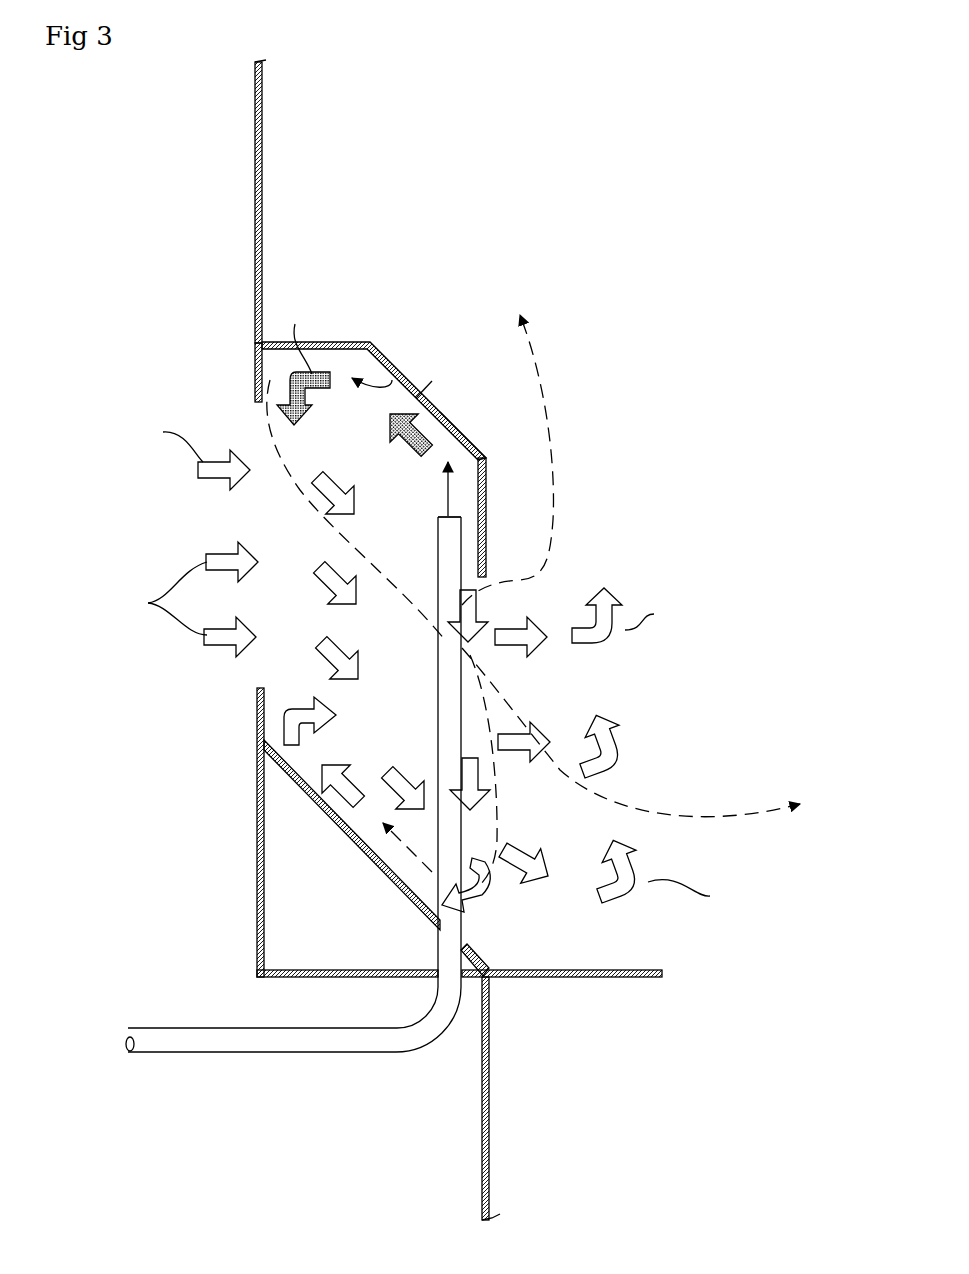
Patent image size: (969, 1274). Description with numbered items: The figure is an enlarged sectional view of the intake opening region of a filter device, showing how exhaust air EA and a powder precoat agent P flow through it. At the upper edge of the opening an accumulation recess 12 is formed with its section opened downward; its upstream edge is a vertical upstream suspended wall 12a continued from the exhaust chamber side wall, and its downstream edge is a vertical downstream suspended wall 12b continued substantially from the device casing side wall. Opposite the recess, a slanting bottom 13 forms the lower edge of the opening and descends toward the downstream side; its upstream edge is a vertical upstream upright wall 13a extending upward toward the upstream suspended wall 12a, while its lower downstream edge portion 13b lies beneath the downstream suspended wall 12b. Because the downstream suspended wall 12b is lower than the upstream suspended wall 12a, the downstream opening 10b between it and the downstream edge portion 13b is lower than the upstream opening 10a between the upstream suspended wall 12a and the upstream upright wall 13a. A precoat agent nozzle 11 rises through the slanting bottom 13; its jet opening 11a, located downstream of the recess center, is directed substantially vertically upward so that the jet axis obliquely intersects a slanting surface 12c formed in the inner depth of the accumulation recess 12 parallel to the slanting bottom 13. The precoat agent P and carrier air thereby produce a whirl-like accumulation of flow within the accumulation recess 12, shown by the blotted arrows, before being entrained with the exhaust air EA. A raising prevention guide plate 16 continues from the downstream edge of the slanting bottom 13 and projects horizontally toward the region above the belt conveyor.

The upstream opening 10a is at (210, 528).
The downstream opening 10b is at (548, 674).
The precoat agent nozzle 11 is at (438, 657).
The jet opening 11a is at (448, 516).
The accumulation recess 12 is at (392, 380).
The upstream suspended wall 12a is at (256, 372).
The downstream suspended wall 12b is at (487, 520).
The slanting surface 12c is at (440, 430).
The slanting bottom 13 is at (329, 818).
The upstream upright wall 13a is at (257, 710).
The downstream edge portion of slanting bottom 13b is at (482, 962).
The raising prevention guide plate 16 is at (598, 978).